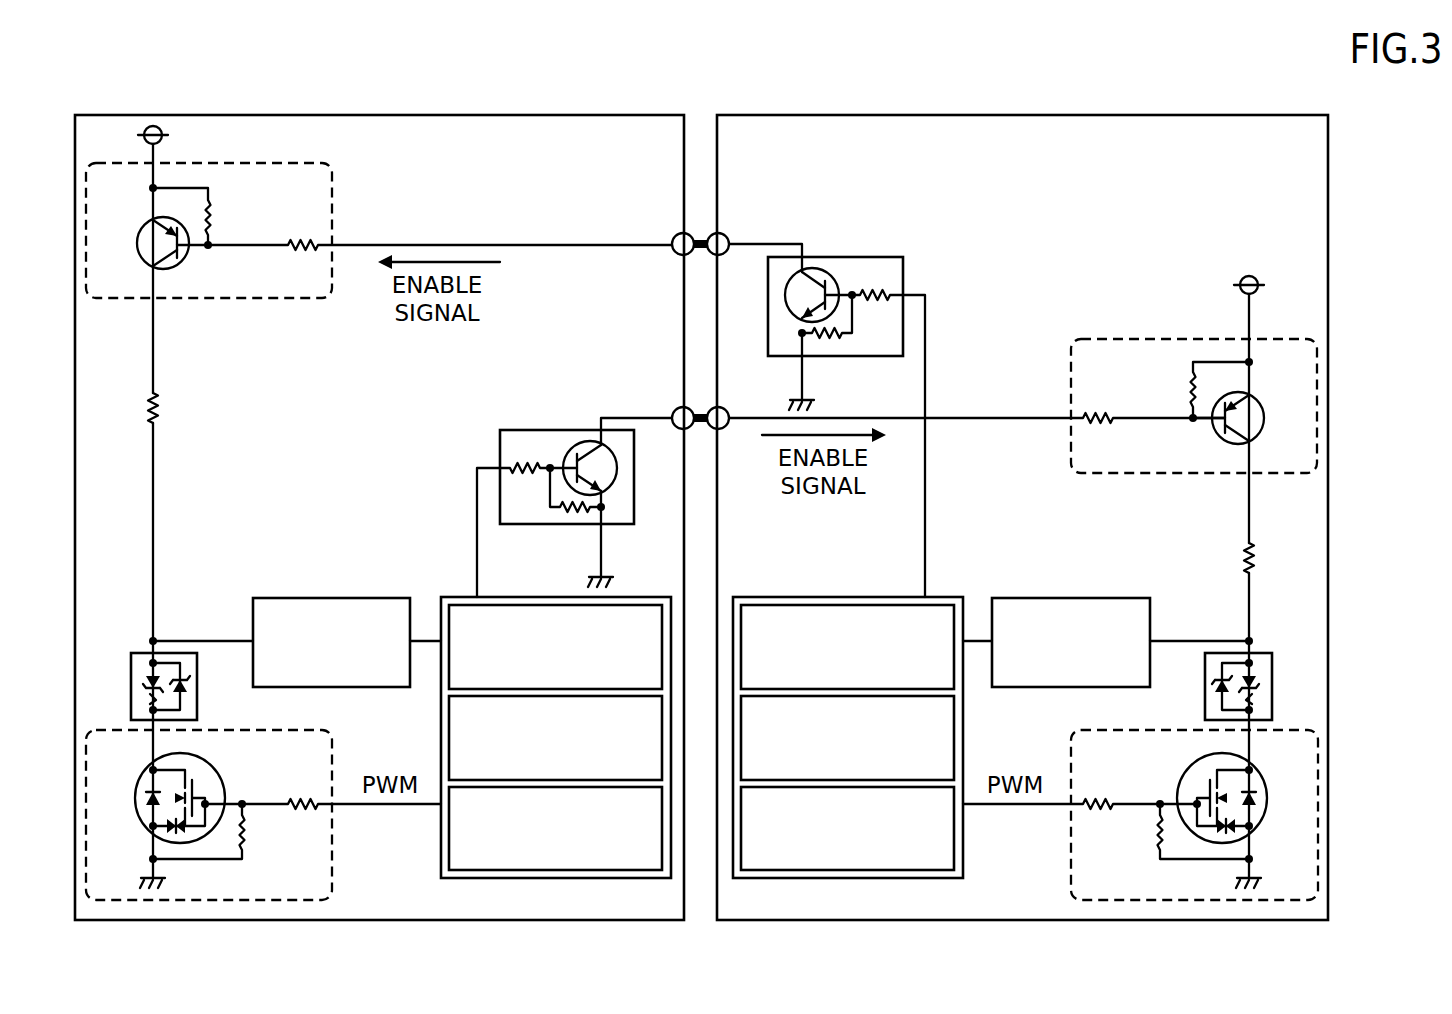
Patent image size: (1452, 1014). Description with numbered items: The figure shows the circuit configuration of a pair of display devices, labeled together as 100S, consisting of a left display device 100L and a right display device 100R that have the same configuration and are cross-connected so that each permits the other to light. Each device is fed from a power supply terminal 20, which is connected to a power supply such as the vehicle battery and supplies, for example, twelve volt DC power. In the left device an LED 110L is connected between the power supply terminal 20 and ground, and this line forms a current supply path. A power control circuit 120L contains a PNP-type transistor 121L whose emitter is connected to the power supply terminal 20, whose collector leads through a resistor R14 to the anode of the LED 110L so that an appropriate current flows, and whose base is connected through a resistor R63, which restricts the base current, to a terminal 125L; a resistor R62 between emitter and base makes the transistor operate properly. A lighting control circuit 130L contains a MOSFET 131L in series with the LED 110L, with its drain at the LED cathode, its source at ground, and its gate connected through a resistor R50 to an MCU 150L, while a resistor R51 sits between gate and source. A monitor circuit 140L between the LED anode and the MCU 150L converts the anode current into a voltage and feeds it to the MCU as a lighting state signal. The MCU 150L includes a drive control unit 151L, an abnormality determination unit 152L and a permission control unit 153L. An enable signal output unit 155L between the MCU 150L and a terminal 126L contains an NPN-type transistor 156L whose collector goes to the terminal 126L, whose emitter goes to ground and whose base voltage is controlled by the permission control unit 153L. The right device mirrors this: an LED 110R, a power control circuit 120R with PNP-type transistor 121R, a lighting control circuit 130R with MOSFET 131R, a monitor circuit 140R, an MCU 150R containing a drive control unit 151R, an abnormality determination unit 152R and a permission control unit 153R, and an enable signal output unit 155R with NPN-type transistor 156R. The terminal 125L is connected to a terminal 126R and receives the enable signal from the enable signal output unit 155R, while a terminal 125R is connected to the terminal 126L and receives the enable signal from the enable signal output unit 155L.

The power supply control system 100S is at (773, 60).
The display device 100L is at (590, 115).
The display device 100R is at (818, 115).
The power supply terminal 20 is at (163, 136).
The LED 110L is at (140, 652).
The LED 110R is at (1262, 652).
The power control circuit 120L is at (238, 163).
The power control circuit 120R is at (1108, 339).
The PNP-type transistor 121L is at (137, 240).
The PNP-type transistor 121R is at (1264, 410).
The terminal 125L is at (676, 236).
The terminal 125R is at (725, 410).
The terminal 126L is at (676, 410).
The terminal 126R is at (725, 236).
The lighting control circuit 130L is at (243, 730).
The lighting control circuit 130R is at (1110, 730).
The MOSFET 131L is at (136, 798).
The MOSFET 131R is at (1266, 795).
The monitor circuit 140L is at (383, 598).
The monitor circuit 140R is at (1080, 598).
The MCU 150L is at (441, 857).
The MCU 150R is at (963, 857).
The drive control unit 151L is at (449, 665).
The drive control unit 151R is at (954, 665).
The abnormality determination unit 152L is at (449, 740).
The abnormality determination unit 152R is at (954, 740).
The permission control unit 153L is at (449, 828).
The permission control unit 153R is at (954, 828).
The enable signal output unit 155L is at (518, 430).
The enable signal output unit 155R is at (885, 257).
The NPN-type transistor 156L is at (578, 452).
The NPN-type transistor 156R is at (828, 278).
The resistor R14 is at (727, 414).
The resistor R50 is at (701, 787).
The resistor R51 is at (701, 829).
The resistor R62 is at (701, 303).
The resistor R63 is at (716, 316).